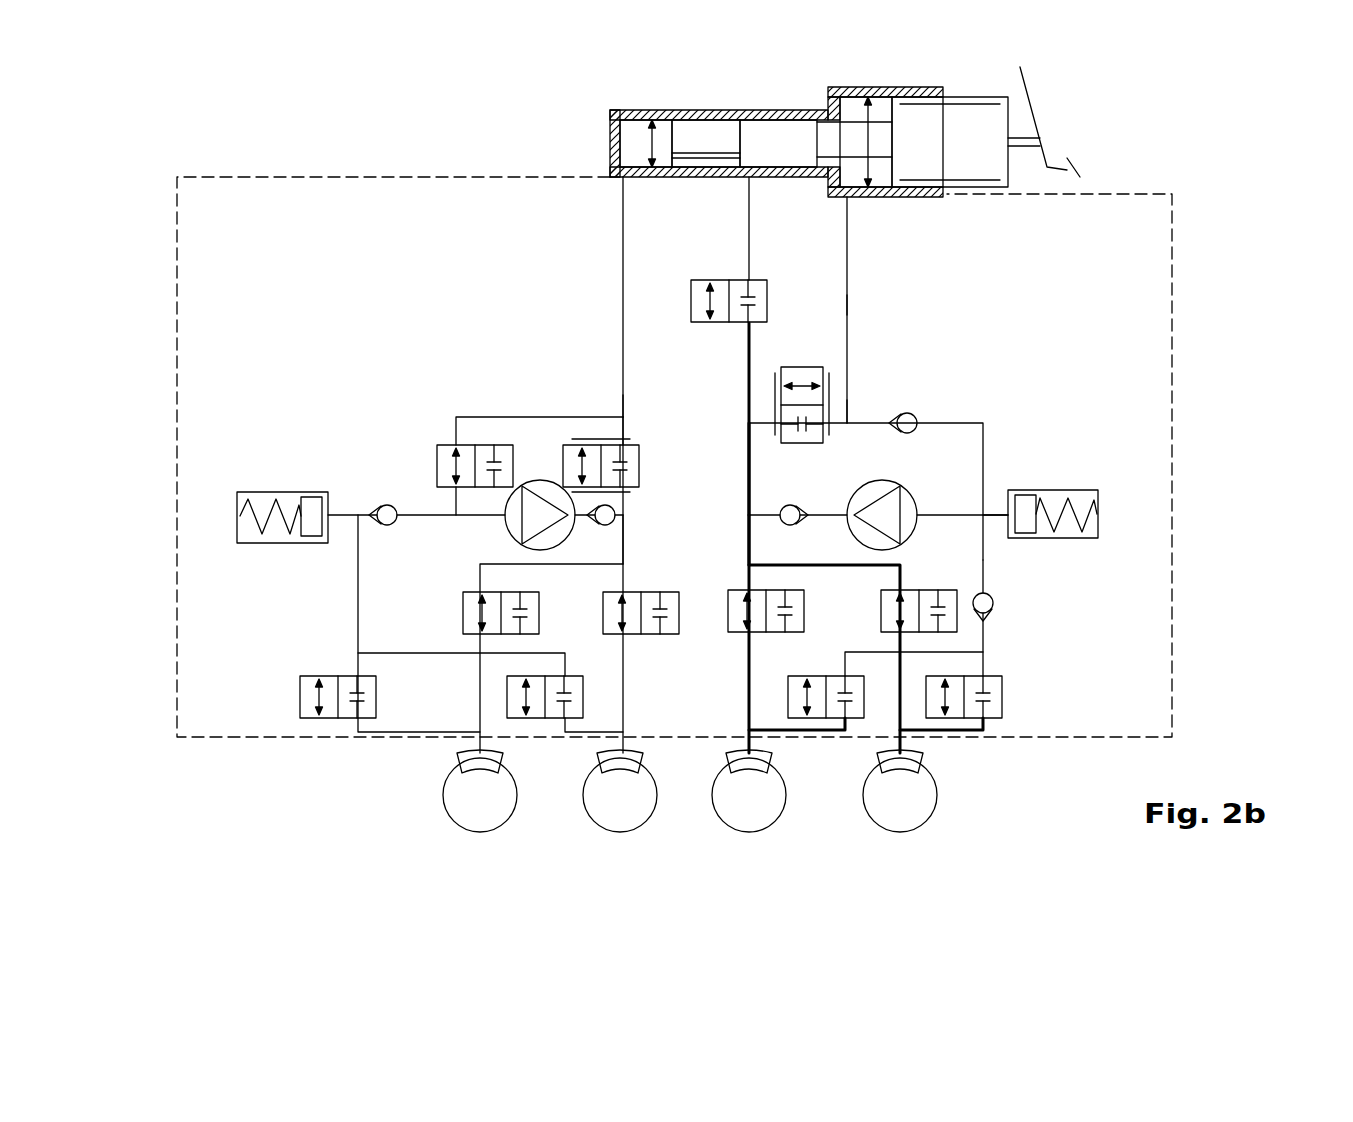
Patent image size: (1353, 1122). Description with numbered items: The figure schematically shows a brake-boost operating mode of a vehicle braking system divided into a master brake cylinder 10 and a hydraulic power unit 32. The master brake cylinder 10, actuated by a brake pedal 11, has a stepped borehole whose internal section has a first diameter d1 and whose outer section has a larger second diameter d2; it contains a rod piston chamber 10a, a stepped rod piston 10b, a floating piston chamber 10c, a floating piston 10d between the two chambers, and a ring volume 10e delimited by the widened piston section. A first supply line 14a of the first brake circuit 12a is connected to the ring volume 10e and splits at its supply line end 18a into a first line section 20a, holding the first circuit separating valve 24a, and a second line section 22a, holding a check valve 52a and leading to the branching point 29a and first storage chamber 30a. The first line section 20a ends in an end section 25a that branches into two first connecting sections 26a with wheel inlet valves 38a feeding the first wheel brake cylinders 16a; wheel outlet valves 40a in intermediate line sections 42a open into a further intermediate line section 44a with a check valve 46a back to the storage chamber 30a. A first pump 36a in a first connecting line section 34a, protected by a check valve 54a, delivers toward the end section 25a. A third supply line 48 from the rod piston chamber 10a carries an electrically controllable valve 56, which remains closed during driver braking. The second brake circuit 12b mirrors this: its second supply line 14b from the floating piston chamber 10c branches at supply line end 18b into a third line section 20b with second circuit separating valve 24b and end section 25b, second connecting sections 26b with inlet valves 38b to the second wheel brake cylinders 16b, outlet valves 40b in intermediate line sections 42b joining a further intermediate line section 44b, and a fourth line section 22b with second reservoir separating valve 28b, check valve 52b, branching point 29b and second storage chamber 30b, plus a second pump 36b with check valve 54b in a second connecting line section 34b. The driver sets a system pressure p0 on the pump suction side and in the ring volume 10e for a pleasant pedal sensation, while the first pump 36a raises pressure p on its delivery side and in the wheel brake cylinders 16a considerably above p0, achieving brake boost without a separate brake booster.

The master brake cylinder 10 is at (590, 118).
The rod piston chamber 10a is at (777, 140).
The rod piston 10b is at (968, 115).
The floating piston chamber 10c is at (632, 133).
The floating piston 10d is at (703, 140).
The ring volume 10e is at (846, 110).
The brake pedal 11 is at (1036, 117).
The first diameter d1 is at (640, 143).
The second diameter d2 is at (878, 190).
The hydraulic power unit 32 is at (197, 175).
The first brake circuit 12a is at (745, 368).
The second brake circuit 12b is at (627, 390).
The first supply line 14a is at (847, 268).
The second supply line 14b is at (623, 262).
The first wheel brake cylinder 16a is at (885, 775).
The second wheel brake cylinder 16b is at (600, 775).
The supply line end 18a is at (855, 420).
The supply line end 18b is at (613, 410).
The first line section 20a is at (749, 468).
The third line section 20b is at (623, 428).
The second line section 22a is at (983, 423).
The fourth line section 22b is at (480, 417).
The first circuit separating valve 24a is at (821, 440).
The second circuit separating valve 24b is at (640, 462).
The end section 25a is at (745, 557).
The end section 25b is at (627, 558).
The first connecting section 26a is at (745, 580).
The second connecting section 26b is at (480, 565).
The second reservoir separating valve 28b is at (442, 445).
The end section or branching point 29a is at (987, 507).
The end section or branching point 29b is at (352, 507).
The first storage chamber 30a is at (1078, 490).
The second storage chamber 30b is at (278, 492).
The first connecting line section 34a is at (950, 515).
The second connecting line section 34b is at (470, 515).
The first pump 36a is at (905, 485).
The second pump 36b is at (540, 480).
The wheel inlet valve 38a is at (806, 612).
The wheel inlet valve 38b is at (463, 612).
The wheel outlet valve 40a is at (788, 690).
The wheel outlet valve 40b is at (300, 705).
The intermediate line section 42a is at (983, 652).
The intermediate line section 42b is at (358, 653).
The further intermediate line section 44a is at (985, 575).
The further intermediate line section 44b is at (358, 600).
The check valve 46a is at (995, 603).
The third supply line 48 is at (749, 210).
The check valve 52a is at (916, 416).
The check valve 52b is at (388, 505).
The check valve 54a is at (800, 525).
The check valve 54b is at (602, 527).
The electrically controllable valve 56 is at (768, 295).
The pressure p is at (745, 515).
The system pressure p0 is at (853, 305).